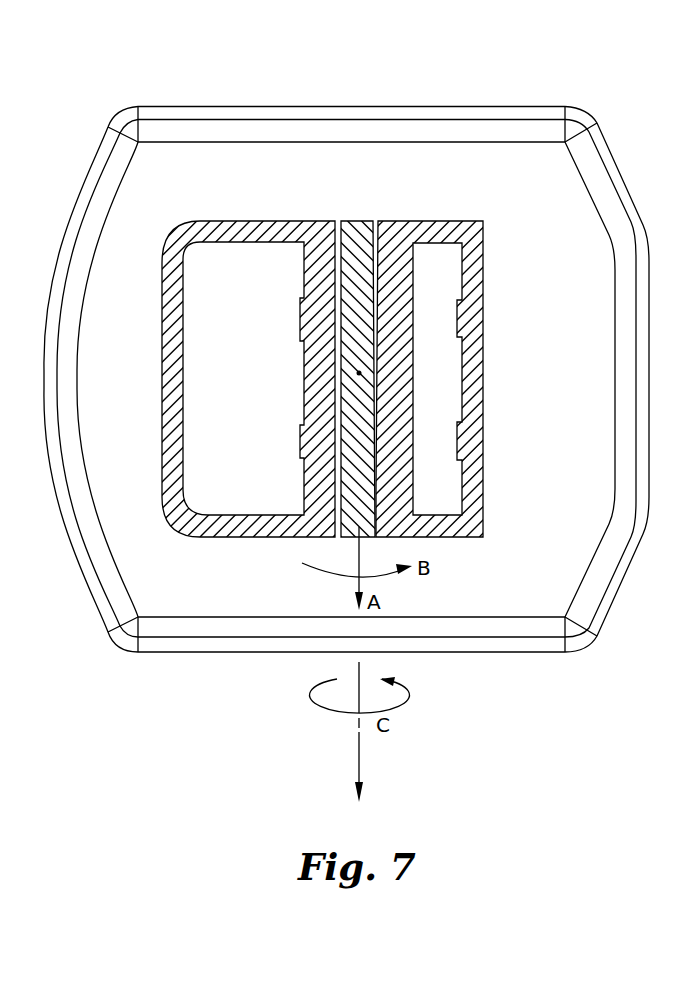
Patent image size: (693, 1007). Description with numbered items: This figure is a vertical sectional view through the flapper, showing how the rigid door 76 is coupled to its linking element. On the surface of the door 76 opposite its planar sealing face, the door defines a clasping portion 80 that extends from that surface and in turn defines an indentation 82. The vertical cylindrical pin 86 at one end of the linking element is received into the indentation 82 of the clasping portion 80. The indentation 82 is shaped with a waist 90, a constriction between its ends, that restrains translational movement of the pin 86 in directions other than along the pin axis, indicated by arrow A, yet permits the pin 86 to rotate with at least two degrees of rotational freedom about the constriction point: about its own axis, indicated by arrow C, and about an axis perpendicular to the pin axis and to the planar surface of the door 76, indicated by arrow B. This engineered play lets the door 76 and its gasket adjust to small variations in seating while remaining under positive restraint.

The rigid door 76 is at (593, 99).
The clasping portion 80 is at (312, 228).
The indentation 82 is at (372, 228).
The vertical cylindrical pin 86 is at (358, 226).
The waist 90 is at (356, 372).